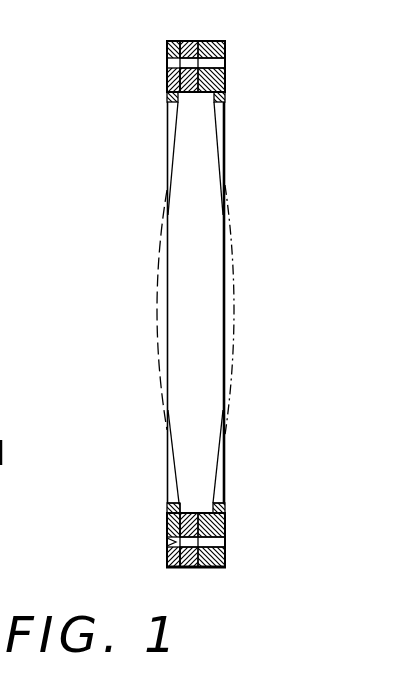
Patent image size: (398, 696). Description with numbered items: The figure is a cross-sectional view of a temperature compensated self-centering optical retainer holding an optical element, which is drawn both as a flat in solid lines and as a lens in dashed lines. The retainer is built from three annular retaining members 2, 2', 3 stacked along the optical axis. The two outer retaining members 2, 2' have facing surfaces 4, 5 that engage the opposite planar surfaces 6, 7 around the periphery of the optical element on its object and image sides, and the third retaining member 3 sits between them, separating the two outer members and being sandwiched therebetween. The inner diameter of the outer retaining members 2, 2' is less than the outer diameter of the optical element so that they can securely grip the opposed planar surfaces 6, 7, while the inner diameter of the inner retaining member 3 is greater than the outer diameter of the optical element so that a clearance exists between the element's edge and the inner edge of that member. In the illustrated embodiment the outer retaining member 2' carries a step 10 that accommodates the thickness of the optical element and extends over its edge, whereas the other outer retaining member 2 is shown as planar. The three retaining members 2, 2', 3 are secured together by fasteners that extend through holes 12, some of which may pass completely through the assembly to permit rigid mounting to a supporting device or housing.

The retaining member 2 is at (117, 318).
The retaining member 2' is at (221, 498).
The retaining member 3 is at (188, 570).
The facing surface 4 is at (182, 96).
The facing surface 5 is at (219, 100).
The planar surface 6 is at (168, 97).
The planar surface 7 is at (221, 97).
The step 10 is at (212, 510).
The holes 12 is at (171, 63).